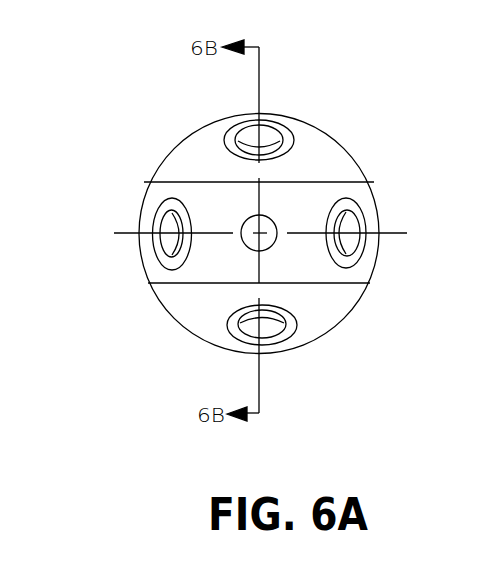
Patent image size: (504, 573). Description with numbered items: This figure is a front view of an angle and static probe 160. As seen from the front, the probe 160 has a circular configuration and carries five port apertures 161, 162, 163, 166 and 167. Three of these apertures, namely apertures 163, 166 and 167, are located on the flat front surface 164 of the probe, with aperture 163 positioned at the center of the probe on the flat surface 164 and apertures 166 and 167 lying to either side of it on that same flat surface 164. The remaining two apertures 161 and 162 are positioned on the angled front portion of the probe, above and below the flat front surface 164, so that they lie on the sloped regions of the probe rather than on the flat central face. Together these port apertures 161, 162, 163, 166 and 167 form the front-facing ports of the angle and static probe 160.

The angle and static probe 160 is at (196, 308).
The port aperture 161 is at (265, 130).
The port aperture 162 is at (267, 320).
The port aperture 163 is at (268, 225).
The flat front surface 164 is at (363, 268).
The port aperture 166 is at (162, 243).
The port aperture 167 is at (353, 223).